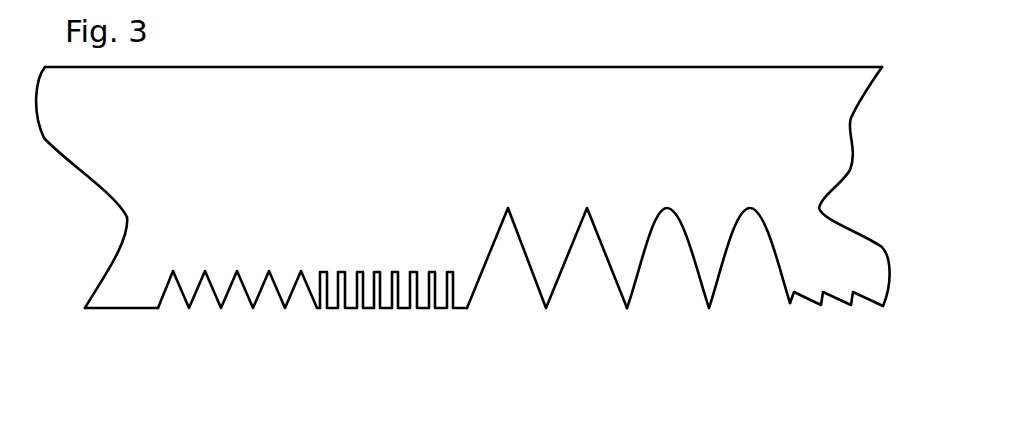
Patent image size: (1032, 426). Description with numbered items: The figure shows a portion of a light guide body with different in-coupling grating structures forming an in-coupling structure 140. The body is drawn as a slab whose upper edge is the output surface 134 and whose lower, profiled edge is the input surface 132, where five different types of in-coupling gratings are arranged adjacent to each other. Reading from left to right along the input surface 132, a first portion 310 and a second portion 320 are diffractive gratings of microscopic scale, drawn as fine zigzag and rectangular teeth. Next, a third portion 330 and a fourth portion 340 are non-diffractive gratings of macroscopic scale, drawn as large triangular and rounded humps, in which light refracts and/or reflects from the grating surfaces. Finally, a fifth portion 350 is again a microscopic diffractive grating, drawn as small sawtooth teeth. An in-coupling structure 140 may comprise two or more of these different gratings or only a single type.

The input surface 132 is at (103, 302).
The output surface 134 is at (705, 66).
The in-coupling structure 140 is at (471, 300).
The first portion 310 is at (213, 309).
The second portion 320 is at (367, 309).
The third portion 330 is at (546, 309).
The fourth portion 340 is at (709, 309).
The fifth portion 350 is at (848, 307).